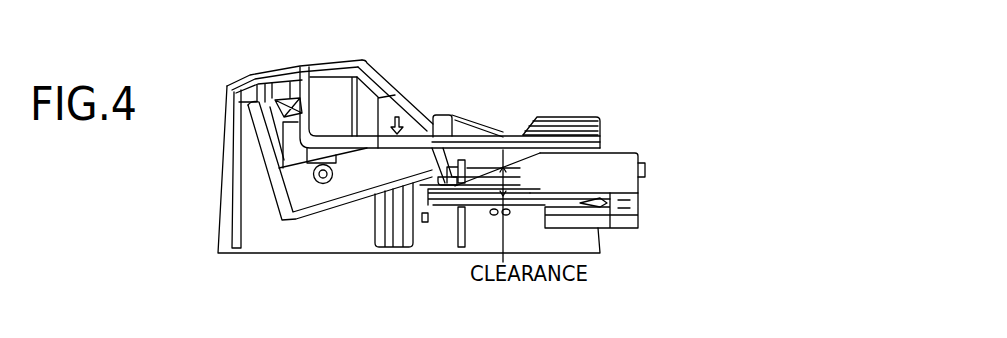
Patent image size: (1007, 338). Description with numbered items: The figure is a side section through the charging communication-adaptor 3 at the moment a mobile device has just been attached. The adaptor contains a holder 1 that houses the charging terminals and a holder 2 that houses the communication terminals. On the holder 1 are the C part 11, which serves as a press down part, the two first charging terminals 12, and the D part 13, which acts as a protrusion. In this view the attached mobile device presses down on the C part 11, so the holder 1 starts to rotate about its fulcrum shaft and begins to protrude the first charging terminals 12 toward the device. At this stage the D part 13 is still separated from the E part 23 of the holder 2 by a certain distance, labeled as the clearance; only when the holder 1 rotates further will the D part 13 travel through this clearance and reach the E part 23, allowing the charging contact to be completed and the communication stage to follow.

The holder 1 is at (300, 222).
The holder 2 is at (612, 230).
The charging communication-adaptor 3 is at (641, 90).
The C part 11 is at (400, 96).
The first charging terminals 12 is at (303, 63).
The D part 13 is at (451, 133).
The E part 23 is at (438, 207).